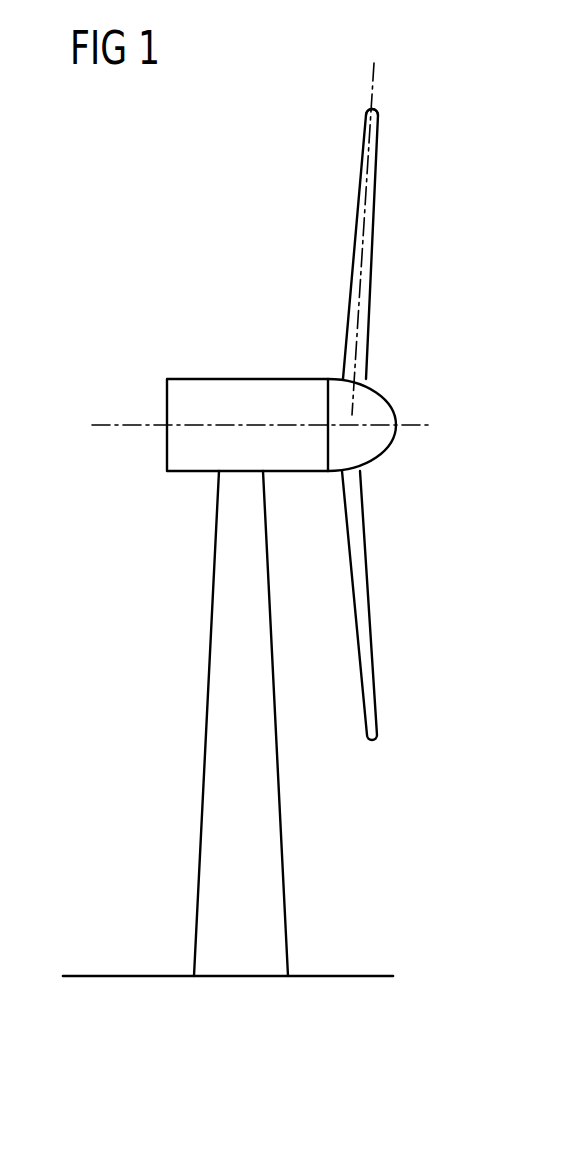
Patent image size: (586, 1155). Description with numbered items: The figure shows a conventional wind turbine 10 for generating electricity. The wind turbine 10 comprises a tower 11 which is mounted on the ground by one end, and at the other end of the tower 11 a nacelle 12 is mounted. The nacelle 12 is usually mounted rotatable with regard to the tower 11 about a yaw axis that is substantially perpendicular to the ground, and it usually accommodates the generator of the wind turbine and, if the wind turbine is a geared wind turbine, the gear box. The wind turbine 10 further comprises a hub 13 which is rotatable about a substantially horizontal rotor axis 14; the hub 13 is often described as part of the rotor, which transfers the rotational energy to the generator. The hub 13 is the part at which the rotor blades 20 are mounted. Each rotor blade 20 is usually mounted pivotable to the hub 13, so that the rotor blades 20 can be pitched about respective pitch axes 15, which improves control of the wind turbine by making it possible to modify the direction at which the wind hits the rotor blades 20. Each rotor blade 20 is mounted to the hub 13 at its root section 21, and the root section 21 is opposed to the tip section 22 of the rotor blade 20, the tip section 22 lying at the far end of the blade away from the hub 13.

The wind turbine 10 is at (146, 613).
The tower 11 is at (262, 808).
The nacelle 12 is at (217, 379).
The hub 13 is at (393, 403).
The rotor axis 14 is at (108, 425).
The pitch axis 15 is at (374, 80).
The rotor blade 20 is at (395, 245).
The root section 21 is at (360, 373).
The tip section 22 is at (378, 127).